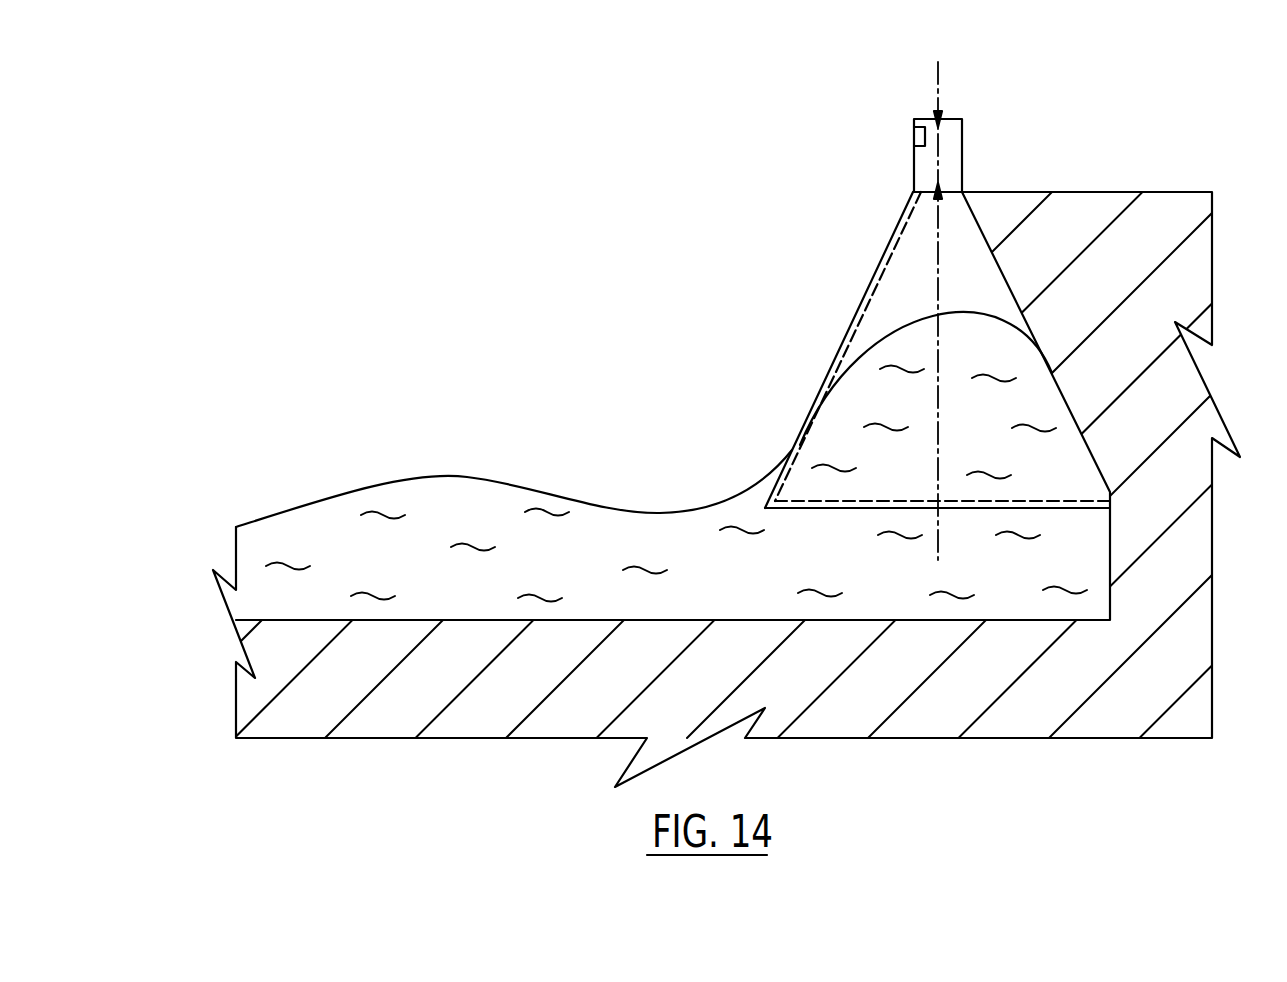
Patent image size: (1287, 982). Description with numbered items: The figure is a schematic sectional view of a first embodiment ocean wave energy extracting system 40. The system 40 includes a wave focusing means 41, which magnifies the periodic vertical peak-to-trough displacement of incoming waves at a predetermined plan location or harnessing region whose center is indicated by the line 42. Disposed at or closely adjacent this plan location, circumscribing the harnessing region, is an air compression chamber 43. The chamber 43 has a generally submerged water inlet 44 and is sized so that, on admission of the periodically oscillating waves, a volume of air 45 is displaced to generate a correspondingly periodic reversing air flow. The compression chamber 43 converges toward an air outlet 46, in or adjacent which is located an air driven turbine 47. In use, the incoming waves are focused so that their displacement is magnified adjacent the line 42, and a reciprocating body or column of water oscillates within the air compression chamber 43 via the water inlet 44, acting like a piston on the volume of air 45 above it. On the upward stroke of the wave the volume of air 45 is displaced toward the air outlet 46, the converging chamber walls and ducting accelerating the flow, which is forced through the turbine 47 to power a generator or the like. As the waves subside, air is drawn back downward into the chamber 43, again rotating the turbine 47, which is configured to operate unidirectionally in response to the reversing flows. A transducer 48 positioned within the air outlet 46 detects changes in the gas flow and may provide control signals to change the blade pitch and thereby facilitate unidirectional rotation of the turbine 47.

The ocean wave energy extracting system 40 is at (470, 316).
The wave focusing means 41 is at (1132, 551).
The line indicating center of harnessing region 42 is at (938, 62).
The air compression chamber 43 is at (848, 273).
The water inlet 44 is at (852, 536).
The volume of air 45 is at (989, 302).
The air outlet 46 is at (884, 185).
The air driven turbine 47 is at (950, 156).
The transducer 48 is at (914, 133).